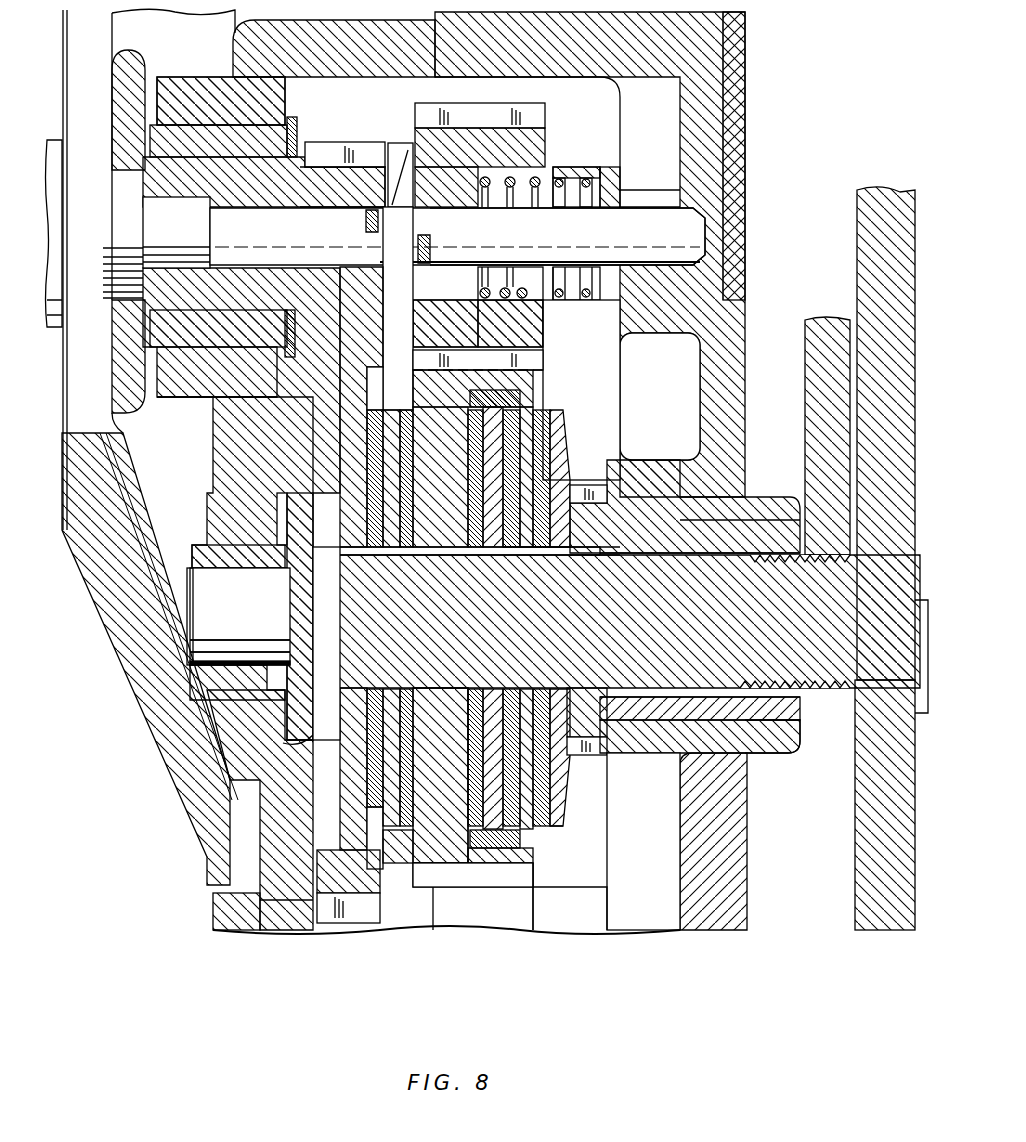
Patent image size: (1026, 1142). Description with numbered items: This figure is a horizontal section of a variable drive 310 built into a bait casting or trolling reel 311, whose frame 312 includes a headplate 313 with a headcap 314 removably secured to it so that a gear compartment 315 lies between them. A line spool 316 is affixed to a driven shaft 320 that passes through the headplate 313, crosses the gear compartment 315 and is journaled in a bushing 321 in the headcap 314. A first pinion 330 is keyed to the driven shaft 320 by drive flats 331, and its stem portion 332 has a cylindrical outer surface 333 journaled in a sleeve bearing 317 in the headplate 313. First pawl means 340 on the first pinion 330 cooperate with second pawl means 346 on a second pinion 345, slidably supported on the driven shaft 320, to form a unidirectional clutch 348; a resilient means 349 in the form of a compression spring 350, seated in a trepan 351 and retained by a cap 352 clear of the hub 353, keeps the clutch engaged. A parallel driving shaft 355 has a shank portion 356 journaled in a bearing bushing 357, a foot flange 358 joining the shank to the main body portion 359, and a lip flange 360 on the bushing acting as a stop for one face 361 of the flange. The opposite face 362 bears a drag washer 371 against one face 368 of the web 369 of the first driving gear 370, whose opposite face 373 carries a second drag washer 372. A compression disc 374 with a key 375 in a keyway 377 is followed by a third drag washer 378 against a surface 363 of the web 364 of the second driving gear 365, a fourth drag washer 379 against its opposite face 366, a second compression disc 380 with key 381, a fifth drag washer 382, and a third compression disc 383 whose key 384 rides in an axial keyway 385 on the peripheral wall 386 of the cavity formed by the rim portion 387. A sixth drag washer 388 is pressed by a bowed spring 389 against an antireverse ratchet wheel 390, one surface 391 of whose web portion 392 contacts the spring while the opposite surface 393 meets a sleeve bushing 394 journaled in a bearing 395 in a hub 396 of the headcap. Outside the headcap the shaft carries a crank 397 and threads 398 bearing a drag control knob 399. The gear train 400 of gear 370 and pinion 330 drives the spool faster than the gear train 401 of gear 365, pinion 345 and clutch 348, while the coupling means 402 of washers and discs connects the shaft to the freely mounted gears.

The variable drive 310 is at (603, 374).
The bait casting reel 311 is at (148, 980).
The frame 312 is at (288, 932).
The headplate 313 is at (240, 922).
The headcap 314 is at (710, 930).
The gear compartment 315 is at (524, 935).
The line spool 316 is at (162, 760).
The sleeve bearing 317 is at (219, 127).
The driven shaft 320 is at (238, 242).
The bushing 321 is at (632, 200).
The first pinion 330 is at (343, 142).
The drive flats 331 is at (184, 245).
The stem portion 332 is at (165, 170).
The cylindrical outer surface 333 is at (244, 158).
The first pawl means 340 is at (395, 257).
The second pinion 345 is at (485, 101).
The second pawl means 346 is at (398, 210).
The unidirectional clutch 348 is at (393, 155).
The resilient means 349 is at (570, 158).
The compression spring 350 is at (568, 302).
The trepan 351 is at (490, 316).
The cap 352 is at (578, 168).
The hub 353 is at (516, 209).
The driving shaft 355 is at (715, 634).
The shank portion 356 is at (200, 598).
The bearing bushing 357 is at (229, 545).
The foot flange 358 is at (300, 500).
The main body portion 359 is at (263, 688).
The lip flange 360 is at (275, 705).
The face 361 is at (286, 581).
The opposite face 362 is at (292, 622).
The surface 363 is at (405, 456).
The web 364 is at (452, 698).
The second driving gear 365 is at (458, 895).
The opposite face 366 is at (395, 820).
The face 368 is at (330, 437).
The web 369 is at (355, 550).
The first driving gear 370 is at (326, 377).
The drag washer 371 is at (340, 500).
The second drag washer 372 is at (405, 430).
The opposite face 373 is at (390, 556).
The compression disc 374 is at (378, 877).
The key 375 is at (380, 552).
The keyway 377 is at (658, 557).
The third drag washer 378 is at (407, 501).
The fourth drag washer 379 is at (468, 752).
The second compression disc 380 is at (493, 471).
The key 381 is at (476, 556).
The fifth drag washer 382 is at (518, 557).
The third compression disc 383 is at (550, 688).
The key 384 is at (522, 401).
The axial keyway 385 is at (520, 389).
The peripheral wall 386 is at (538, 890).
The rim portion 387 is at (540, 872).
The sixth drag washer 388 is at (556, 790).
The bowed spring 389 is at (565, 456).
The antireverse ratchet wheel 390 is at (593, 482).
The surface 391 is at (588, 690).
The web portion 392 is at (590, 553).
The opposite surface 393 is at (628, 745).
The sleeve bushing 394 is at (702, 700).
The bearing 395 is at (740, 749).
The hub 396 is at (660, 760).
The crank 397 is at (860, 218).
The threads 398 is at (862, 688).
The drag control knob 399 is at (808, 408).
The gear train 400 is at (290, 395).
The gear train 401 is at (398, 379).
The coupling means 402 is at (580, 607).